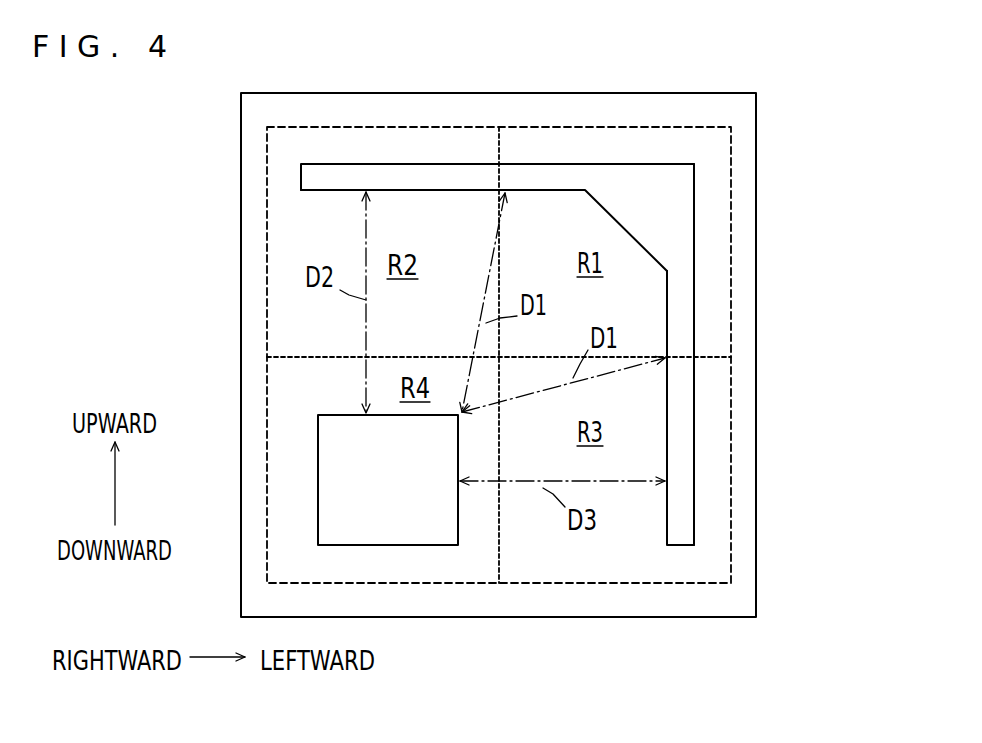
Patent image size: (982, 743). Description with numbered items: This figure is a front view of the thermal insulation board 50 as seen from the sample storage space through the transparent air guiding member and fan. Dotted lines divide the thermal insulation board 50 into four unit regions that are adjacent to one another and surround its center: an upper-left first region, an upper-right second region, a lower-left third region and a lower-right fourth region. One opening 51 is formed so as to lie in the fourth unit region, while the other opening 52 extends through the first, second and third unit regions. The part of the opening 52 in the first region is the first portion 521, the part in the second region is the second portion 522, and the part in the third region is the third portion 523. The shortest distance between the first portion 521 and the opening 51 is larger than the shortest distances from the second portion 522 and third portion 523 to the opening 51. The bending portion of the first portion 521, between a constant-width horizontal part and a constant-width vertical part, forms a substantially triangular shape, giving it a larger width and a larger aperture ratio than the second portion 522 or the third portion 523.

The thermal insulation board 50 is at (745, 556).
The opening 51 is at (441, 552).
The opening 52 is at (562, 367).
The first portion 521 is at (745, 298).
The second portion 522 is at (372, 168).
The third portion 523 is at (693, 484).